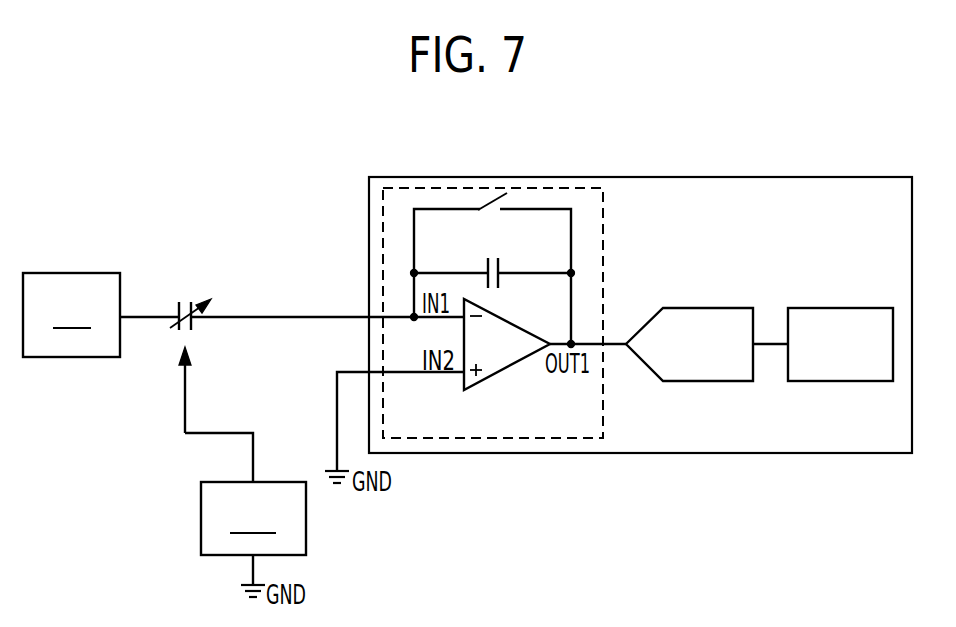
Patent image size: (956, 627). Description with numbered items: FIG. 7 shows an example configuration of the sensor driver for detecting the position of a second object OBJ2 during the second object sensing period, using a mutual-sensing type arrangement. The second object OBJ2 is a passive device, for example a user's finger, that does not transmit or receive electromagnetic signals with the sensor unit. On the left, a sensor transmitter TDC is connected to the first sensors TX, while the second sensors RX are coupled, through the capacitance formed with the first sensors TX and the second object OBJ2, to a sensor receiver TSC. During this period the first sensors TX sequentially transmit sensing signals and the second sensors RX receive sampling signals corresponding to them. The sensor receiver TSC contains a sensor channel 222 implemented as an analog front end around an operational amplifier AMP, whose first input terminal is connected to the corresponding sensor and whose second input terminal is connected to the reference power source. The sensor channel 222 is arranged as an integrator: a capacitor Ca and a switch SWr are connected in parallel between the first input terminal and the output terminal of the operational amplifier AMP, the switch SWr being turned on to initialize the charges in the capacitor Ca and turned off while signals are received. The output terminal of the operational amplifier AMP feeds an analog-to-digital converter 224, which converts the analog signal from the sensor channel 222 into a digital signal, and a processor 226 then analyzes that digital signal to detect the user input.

The sensor channel 222 is at (603, 243).
The analog-to-digital converter 224 is at (708, 307).
The processor 226 is at (840, 307).
The sensor receiver TSC is at (763, 177).
The sensor transmitter TDC is at (71, 315).
The second object OBJ2 is at (253, 518).
The operational amplifier AMP is at (497, 377).
The switch SWr is at (492, 268).
The capacitor Ca is at (492, 266).
The first sensors TX is at (174, 323).
The second sensors RX is at (195, 323).